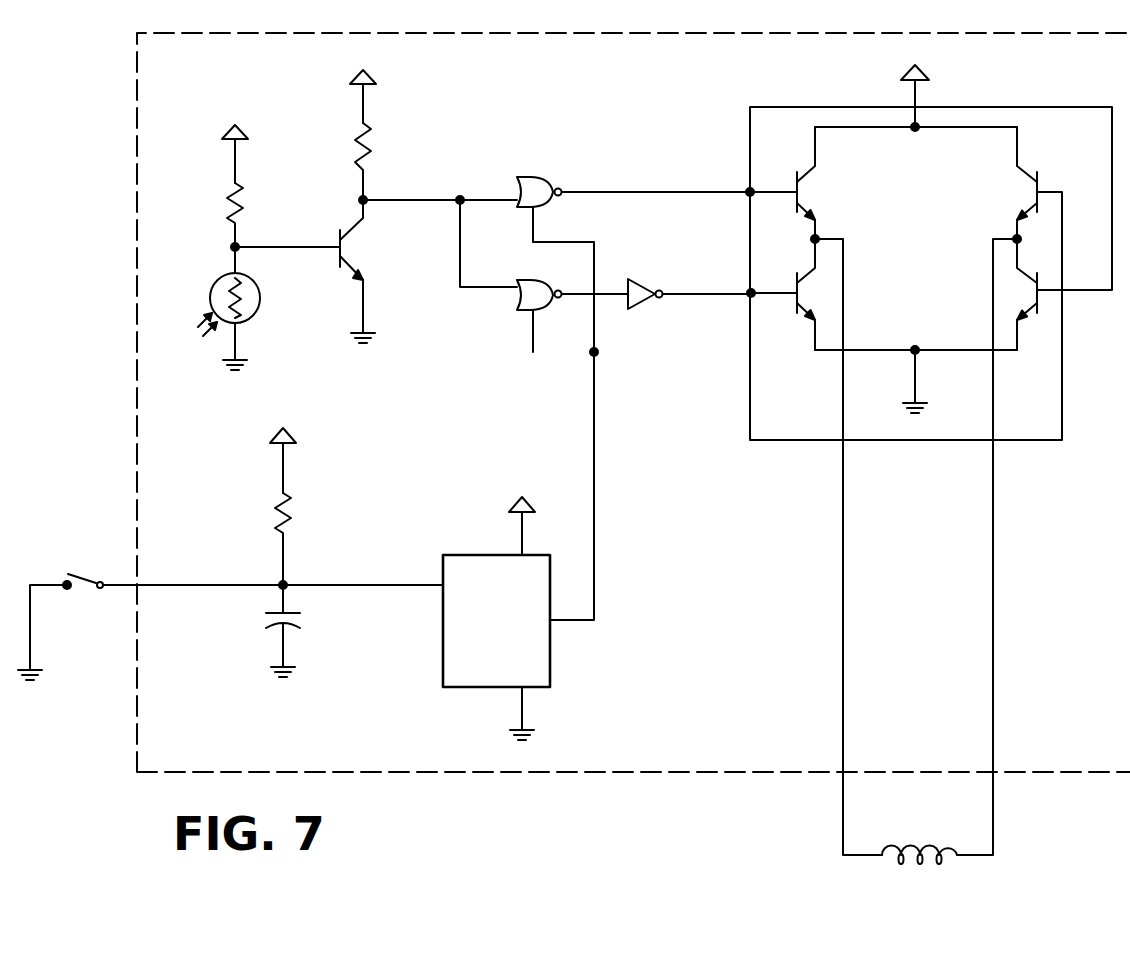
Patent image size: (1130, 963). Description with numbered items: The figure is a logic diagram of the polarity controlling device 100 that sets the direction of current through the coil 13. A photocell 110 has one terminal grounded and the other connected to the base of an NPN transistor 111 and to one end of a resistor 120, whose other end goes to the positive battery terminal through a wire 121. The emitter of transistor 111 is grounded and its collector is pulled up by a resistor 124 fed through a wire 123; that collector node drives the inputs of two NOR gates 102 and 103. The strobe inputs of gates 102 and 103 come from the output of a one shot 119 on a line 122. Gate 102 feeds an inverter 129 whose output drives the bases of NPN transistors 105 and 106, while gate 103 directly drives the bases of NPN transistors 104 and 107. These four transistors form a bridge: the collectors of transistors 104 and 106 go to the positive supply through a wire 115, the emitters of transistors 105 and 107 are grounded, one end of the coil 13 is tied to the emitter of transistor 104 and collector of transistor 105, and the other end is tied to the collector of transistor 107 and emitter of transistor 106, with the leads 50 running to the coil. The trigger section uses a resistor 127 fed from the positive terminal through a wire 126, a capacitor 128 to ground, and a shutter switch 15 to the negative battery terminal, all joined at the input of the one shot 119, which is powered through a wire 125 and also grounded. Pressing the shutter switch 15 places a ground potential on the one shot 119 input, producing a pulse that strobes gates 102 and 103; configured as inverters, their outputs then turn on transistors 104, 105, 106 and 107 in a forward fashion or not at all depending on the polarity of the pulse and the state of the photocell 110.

The polarity controlling device 100 is at (387, 744).
The shutter switch 15 is at (90, 572).
The coil 13 is at (908, 845).
The motor leads 50 is at (843, 790).
The photocell 110 is at (213, 288).
The NPN transistor 111 is at (355, 232).
The resistor 120 is at (230, 195).
The wire 121 is at (236, 160).
The wire 123 is at (363, 100).
The resistor 124 is at (373, 150).
The NOR gate 102 is at (517, 300).
The NOR gate 103 is at (527, 178).
The inverter 129 is at (636, 282).
The wire 115 is at (910, 86).
The NPN transistor 104 is at (806, 176).
The NPN transistor 105 is at (790, 302).
The NPN transistor 106 is at (1030, 186).
The NPN transistor 107 is at (1042, 302).
The one shot 119 is at (535, 667).
The line 122 is at (596, 410).
The wire 125 is at (525, 522).
The wire 126 is at (286, 477).
The resistor 127 is at (278, 500).
The capacitor 128 is at (305, 623).